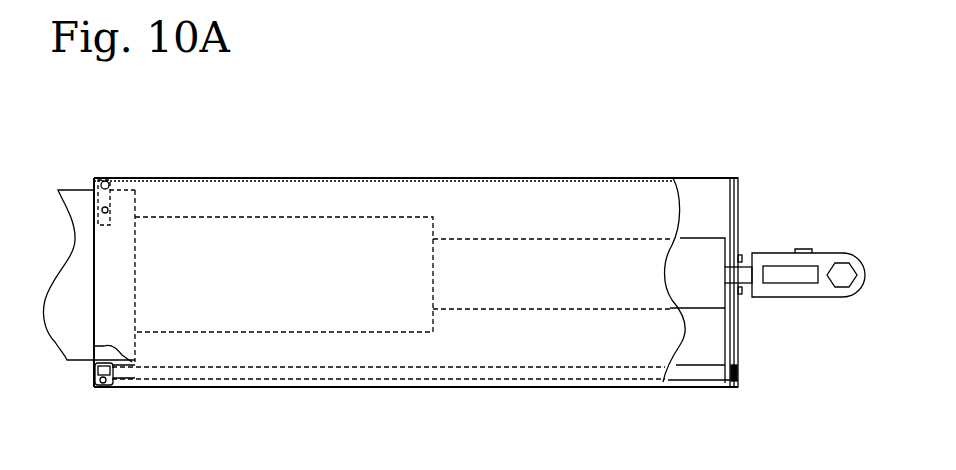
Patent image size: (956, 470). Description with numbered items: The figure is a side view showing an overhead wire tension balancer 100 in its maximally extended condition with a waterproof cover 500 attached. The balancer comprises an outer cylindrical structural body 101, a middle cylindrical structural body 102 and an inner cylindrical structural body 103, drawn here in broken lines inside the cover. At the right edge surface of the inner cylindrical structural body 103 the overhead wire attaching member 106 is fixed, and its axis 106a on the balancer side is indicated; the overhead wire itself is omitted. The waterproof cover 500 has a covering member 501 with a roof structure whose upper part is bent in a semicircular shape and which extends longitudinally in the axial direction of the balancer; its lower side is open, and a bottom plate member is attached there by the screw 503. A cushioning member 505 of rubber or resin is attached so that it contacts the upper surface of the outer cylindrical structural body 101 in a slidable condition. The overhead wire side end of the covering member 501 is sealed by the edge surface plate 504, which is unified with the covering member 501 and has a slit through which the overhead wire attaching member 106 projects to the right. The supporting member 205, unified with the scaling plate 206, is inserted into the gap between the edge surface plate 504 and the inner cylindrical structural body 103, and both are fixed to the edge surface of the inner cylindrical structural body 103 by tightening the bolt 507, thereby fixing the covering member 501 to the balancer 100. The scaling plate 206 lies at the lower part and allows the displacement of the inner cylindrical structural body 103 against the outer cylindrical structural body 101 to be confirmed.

The overhead wire tension balancer 100 is at (55, 357).
The outer cylindrical structural body 101 is at (75, 202).
The middle cylindrical structural body 102 is at (318, 232).
The inner cylindrical structural body 103 is at (489, 258).
The overhead wire attaching member 106 is at (771, 262).
The axis 106a is at (722, 262).
The supporting member 205 is at (725, 343).
The scaling plate 206 is at (678, 374).
The waterproof cover 500 is at (546, 175).
The covering member 501 is at (395, 178).
The screw 503 is at (105, 386).
The edge surface plate 504 is at (739, 353).
The cushioning member 505 is at (112, 200).
The bolt 507 is at (739, 294).